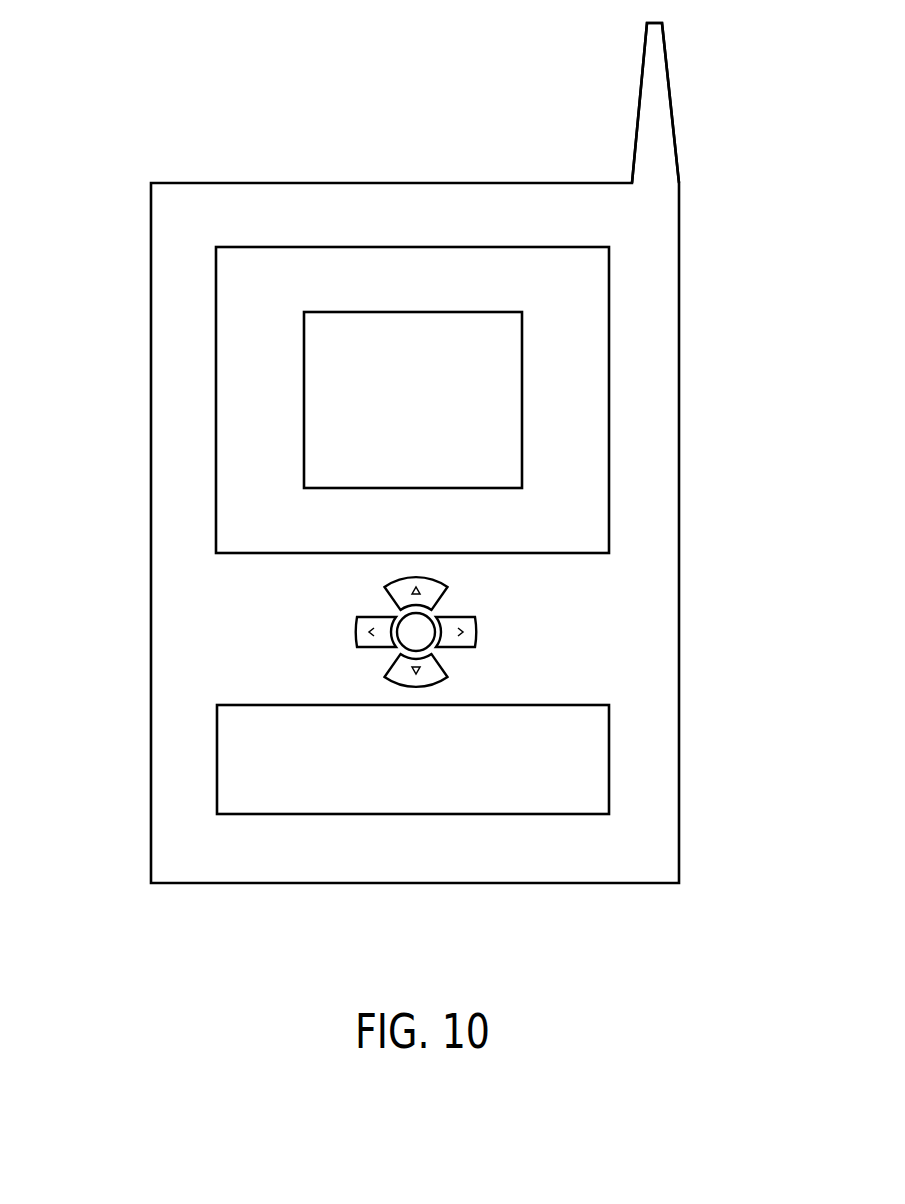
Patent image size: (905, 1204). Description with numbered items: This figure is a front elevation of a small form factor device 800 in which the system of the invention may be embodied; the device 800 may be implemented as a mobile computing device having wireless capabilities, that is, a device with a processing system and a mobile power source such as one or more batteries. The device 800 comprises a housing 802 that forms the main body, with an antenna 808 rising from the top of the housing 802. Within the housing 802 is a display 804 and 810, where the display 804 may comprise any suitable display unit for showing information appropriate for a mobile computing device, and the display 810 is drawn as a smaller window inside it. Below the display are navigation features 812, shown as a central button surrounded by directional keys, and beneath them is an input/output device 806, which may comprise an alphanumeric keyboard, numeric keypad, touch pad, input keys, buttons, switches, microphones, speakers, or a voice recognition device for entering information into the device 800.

The device 800 is at (153, 125).
The housing 802 is at (151, 622).
The display 804 is at (610, 302).
The input/output (I/O) device 806 is at (610, 760).
The antenna 808 is at (640, 102).
The display 810 is at (414, 312).
The navigation features 812 is at (511, 633).